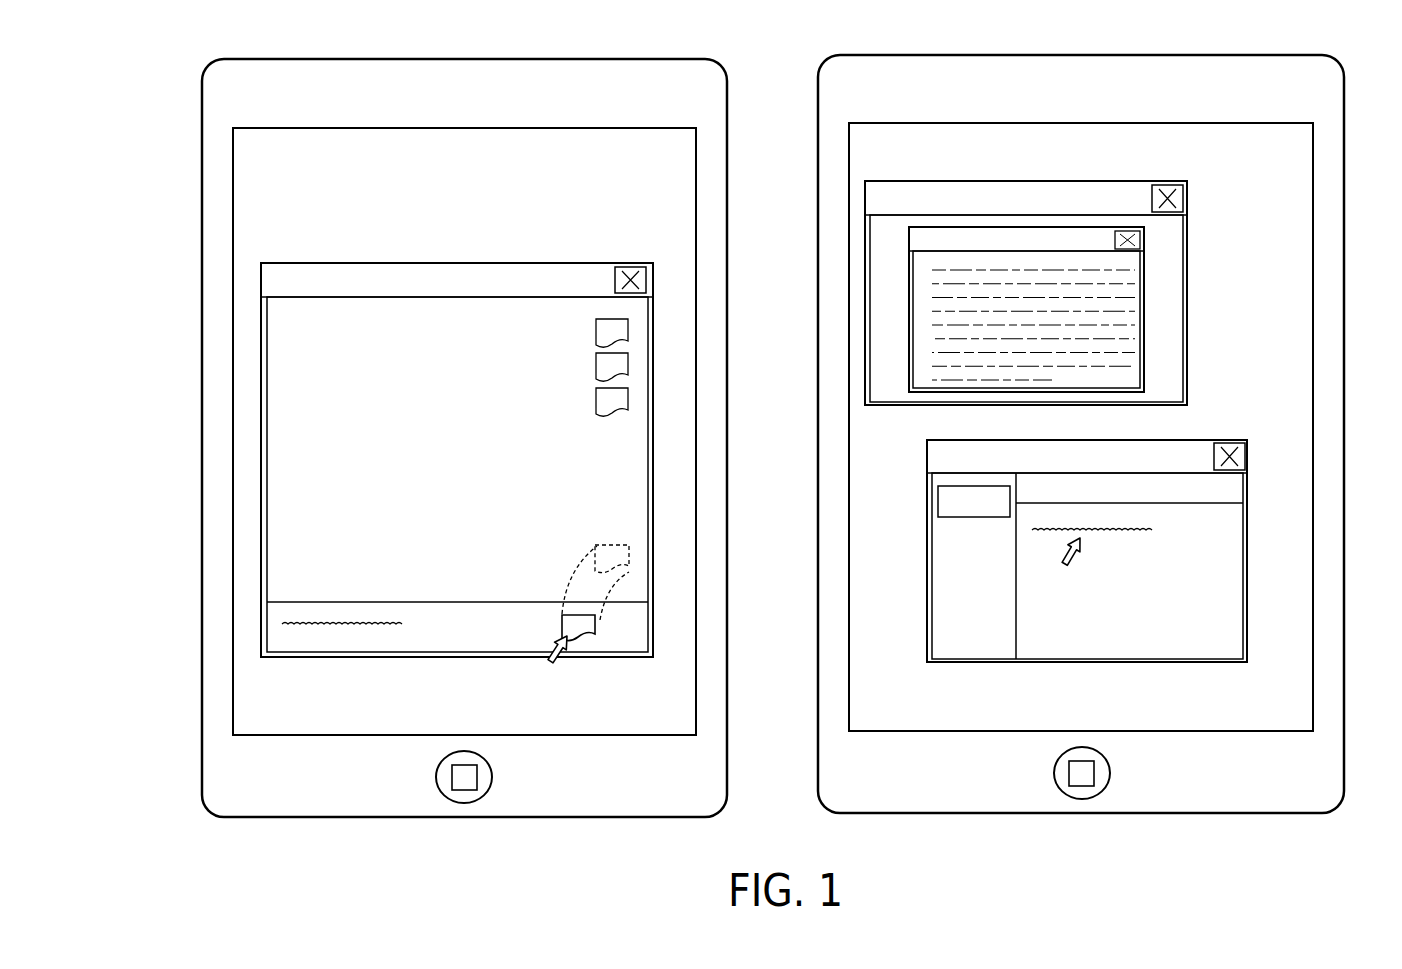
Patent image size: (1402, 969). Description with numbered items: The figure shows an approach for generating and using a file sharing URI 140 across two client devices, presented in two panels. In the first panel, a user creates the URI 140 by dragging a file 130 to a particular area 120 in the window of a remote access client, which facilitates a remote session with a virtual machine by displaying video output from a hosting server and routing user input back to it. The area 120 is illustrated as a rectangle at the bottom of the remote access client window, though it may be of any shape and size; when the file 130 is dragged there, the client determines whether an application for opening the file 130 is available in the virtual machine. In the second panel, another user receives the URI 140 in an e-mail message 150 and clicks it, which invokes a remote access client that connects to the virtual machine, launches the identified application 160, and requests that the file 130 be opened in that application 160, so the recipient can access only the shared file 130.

The area 120 is at (640, 619).
The file 130 is at (596, 627).
The file sharing URI 140 is at (327, 620).
The e-mail message 150 is at (1228, 523).
The application 160 is at (1144, 293).